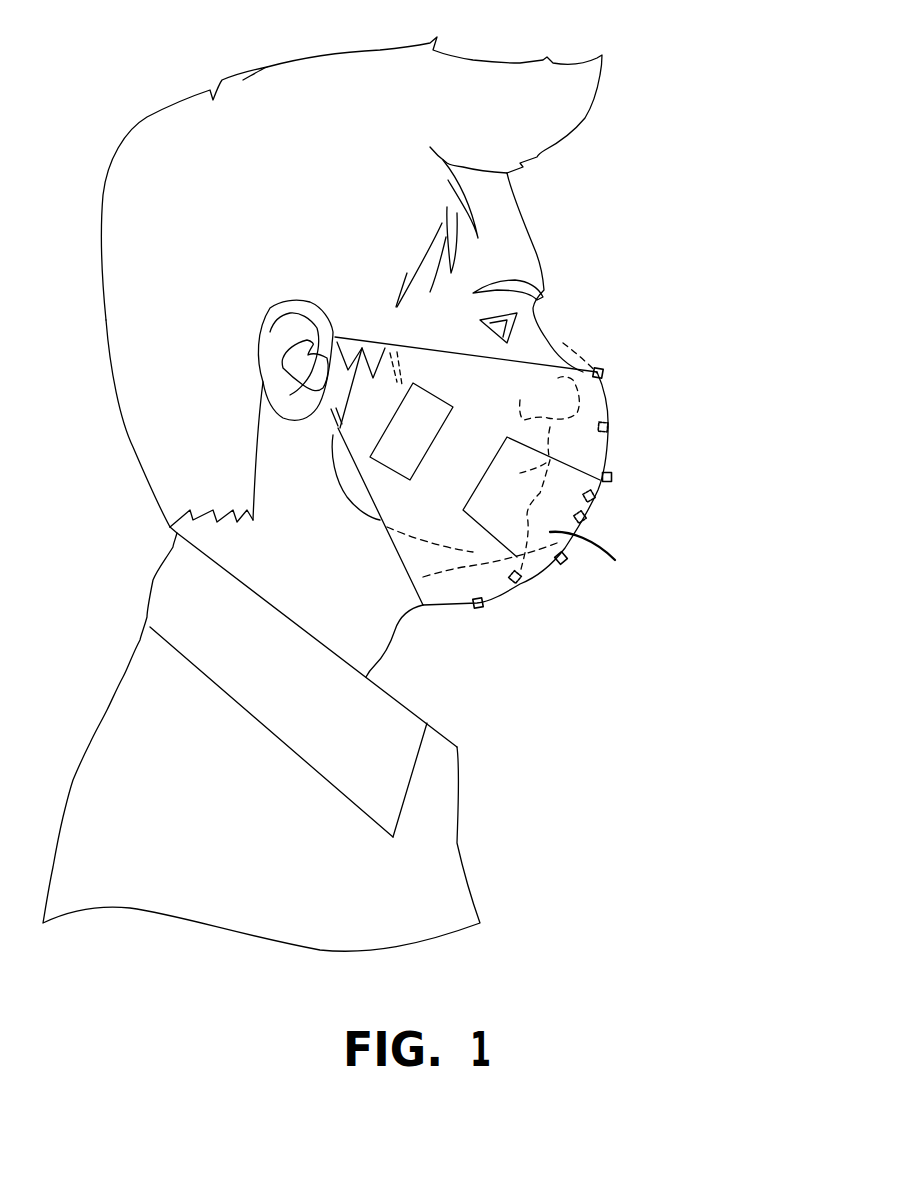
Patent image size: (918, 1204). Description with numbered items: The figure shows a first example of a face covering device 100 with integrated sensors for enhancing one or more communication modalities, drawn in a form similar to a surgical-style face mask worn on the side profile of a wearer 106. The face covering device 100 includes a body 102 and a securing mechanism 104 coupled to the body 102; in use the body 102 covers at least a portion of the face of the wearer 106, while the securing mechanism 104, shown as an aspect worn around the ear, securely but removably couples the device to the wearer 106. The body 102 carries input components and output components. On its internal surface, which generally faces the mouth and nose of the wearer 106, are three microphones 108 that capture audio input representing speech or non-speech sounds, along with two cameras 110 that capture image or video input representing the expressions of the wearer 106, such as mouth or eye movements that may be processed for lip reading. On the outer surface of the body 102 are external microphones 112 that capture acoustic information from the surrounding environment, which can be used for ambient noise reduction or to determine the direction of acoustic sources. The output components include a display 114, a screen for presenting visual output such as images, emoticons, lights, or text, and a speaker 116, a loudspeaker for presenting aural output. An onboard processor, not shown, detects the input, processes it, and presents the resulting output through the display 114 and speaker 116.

The face covering device 100 is at (337, 537).
The body 102 is at (413, 552).
The securing mechanism 104 is at (343, 335).
The wearer 106 is at (480, 58).
The microphones 108 is at (610, 427).
The cameras 110 is at (603, 373).
The external microphones 112 is at (610, 477).
The display 114 is at (615, 560).
The speaker 116 is at (400, 450).